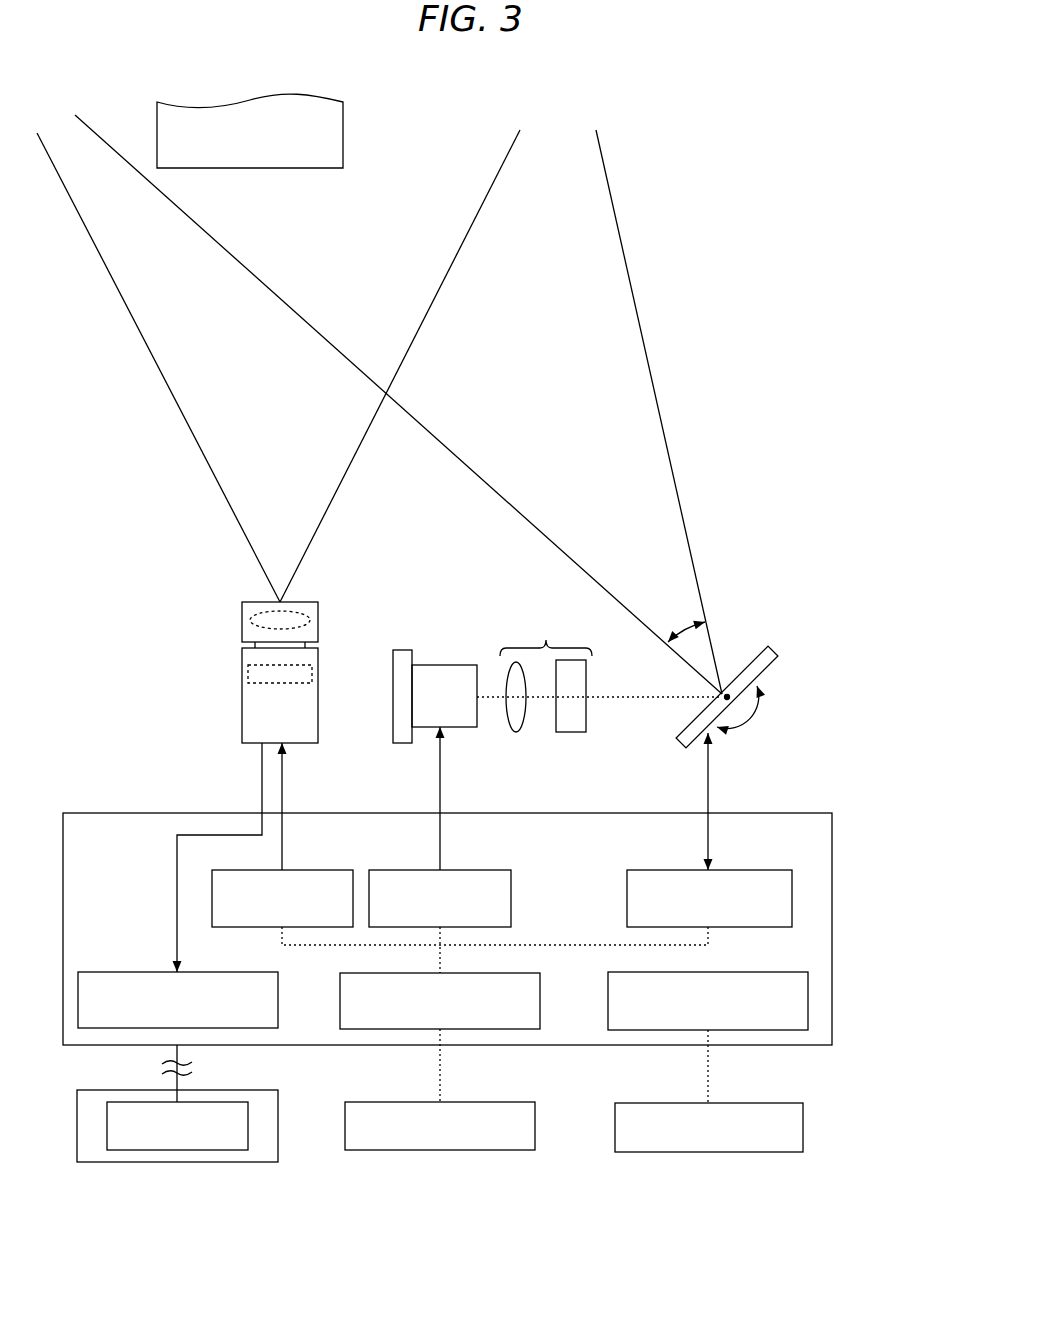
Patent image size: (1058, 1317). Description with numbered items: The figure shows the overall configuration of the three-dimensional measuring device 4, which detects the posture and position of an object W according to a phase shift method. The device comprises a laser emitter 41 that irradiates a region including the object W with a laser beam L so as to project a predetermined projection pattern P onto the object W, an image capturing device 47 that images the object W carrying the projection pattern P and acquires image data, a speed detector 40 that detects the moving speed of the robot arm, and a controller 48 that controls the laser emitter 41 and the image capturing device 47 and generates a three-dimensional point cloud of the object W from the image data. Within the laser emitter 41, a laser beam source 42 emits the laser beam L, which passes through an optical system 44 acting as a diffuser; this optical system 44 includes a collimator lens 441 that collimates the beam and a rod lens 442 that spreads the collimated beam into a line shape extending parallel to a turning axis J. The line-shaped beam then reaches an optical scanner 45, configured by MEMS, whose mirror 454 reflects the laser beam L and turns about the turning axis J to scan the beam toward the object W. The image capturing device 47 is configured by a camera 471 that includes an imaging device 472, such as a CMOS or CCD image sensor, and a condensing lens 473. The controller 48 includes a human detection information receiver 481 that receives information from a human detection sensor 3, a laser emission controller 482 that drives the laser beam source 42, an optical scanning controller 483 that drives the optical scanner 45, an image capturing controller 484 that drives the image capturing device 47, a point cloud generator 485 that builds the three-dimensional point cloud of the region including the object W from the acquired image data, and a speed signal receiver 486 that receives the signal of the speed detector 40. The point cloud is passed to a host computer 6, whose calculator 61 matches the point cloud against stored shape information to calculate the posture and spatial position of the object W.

The object W is at (345, 135).
The projection pattern P is at (272, 170).
The laser beam L is at (642, 335).
The turning axis J is at (737, 688).
The human detection sensor 3 is at (493, 1102).
The three-dimensional measuring device 4 is at (773, 487).
The host computer 6 is at (177, 1164).
The calculator 61 is at (225, 1151).
The speed detector 40 is at (762, 1103).
The laser emitter 41 is at (494, 608).
The laser beam source 42 is at (435, 678).
The optical system 44 is at (549, 701).
The collimator lens 441 is at (517, 715).
The rod lens 442 is at (571, 717).
The optical scanner 45 is at (764, 670).
The mirror 454 is at (755, 650).
The image capturing device 47 is at (234, 668).
The camera 471 is at (250, 728).
The imaging device 472 is at (242, 668).
The condensing lens 473 is at (241, 615).
The controller 48 is at (834, 912).
The human detection information receiver 481 is at (541, 996).
The laser emission controller 482 is at (487, 870).
The optical scanning controller 483 is at (772, 870).
The image capturing controller 484 is at (330, 870).
The point cloud generator 485 is at (125, 972).
The speed signal receiver 486 is at (762, 972).